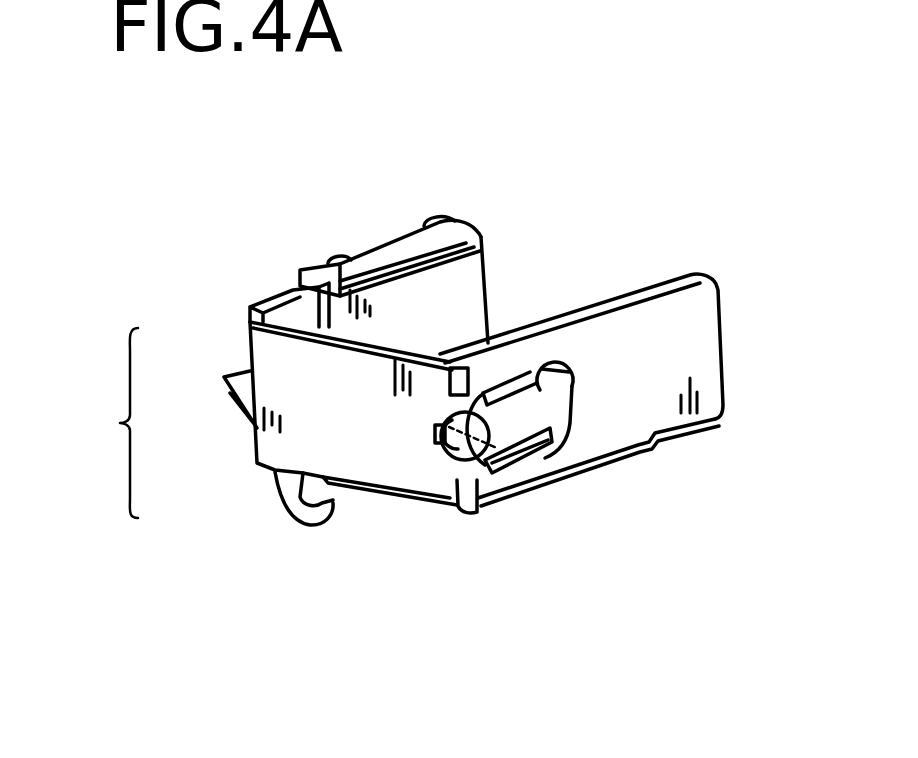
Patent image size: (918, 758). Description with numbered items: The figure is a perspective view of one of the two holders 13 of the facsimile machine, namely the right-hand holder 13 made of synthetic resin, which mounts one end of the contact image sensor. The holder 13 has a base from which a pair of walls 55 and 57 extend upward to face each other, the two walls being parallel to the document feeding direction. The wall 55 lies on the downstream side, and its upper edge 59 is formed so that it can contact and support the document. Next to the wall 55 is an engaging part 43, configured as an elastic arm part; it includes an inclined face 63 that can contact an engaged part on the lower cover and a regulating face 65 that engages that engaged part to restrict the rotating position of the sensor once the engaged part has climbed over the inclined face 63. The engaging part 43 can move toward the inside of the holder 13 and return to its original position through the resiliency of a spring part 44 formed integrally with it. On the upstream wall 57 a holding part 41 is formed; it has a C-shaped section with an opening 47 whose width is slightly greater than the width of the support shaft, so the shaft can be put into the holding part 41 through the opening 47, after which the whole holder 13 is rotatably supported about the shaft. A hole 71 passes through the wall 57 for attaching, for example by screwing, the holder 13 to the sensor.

The holder 13 is at (600, 212).
The holding part 41 is at (585, 492).
The opening 47 is at (517, 457).
The engaging part 43 is at (104, 423).
The spring part 44 is at (283, 503).
The wall 55 is at (458, 290).
The wall 57 is at (697, 363).
The upper edge 59 is at (390, 247).
The inclined face 63 is at (247, 427).
The regulating face 65 is at (233, 366).
The hole 71 is at (562, 360).